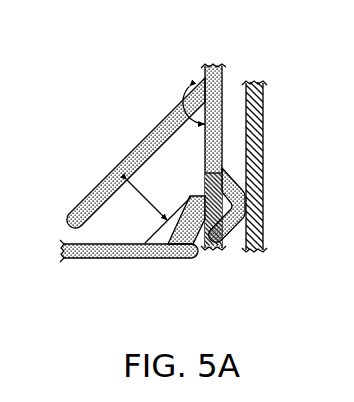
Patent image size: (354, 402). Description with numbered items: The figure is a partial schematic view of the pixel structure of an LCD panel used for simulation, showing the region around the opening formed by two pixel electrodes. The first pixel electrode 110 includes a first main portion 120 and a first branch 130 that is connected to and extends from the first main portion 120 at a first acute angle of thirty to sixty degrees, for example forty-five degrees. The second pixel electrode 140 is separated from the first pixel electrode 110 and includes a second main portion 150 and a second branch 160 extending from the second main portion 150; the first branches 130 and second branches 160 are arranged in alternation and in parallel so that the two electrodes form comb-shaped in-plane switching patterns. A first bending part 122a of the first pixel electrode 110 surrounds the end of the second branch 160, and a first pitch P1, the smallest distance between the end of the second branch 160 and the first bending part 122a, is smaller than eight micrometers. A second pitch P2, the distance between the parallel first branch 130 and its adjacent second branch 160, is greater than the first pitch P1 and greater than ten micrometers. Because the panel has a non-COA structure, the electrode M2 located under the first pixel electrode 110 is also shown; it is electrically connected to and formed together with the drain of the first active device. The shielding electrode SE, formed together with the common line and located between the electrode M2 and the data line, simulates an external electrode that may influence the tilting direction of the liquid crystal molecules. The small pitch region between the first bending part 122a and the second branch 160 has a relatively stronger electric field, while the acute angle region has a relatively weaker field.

The first pixel electrode 110 is at (146, 155).
The first main portion 120 is at (204, 95).
The first bending part 122a is at (237, 242).
The first branch 130 is at (194, 89).
The second pixel electrode 140 is at (132, 269).
The second main portion 150 is at (193, 305).
The second branch 160 is at (170, 259).
The electrode M2 is at (209, 249).
The first pitch P1 is at (204, 196).
The second pitch P2 is at (159, 210).
The shielding electrode SE is at (264, 216).